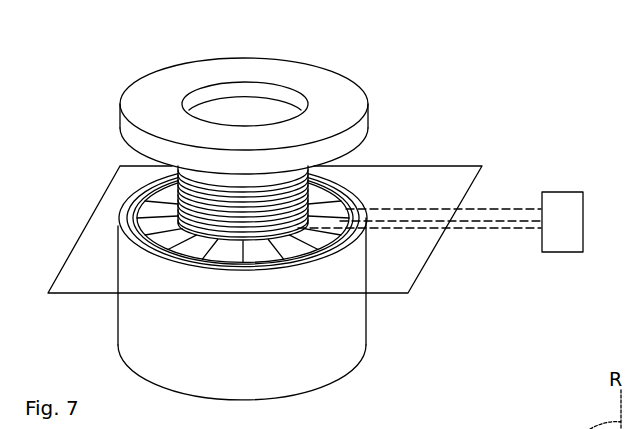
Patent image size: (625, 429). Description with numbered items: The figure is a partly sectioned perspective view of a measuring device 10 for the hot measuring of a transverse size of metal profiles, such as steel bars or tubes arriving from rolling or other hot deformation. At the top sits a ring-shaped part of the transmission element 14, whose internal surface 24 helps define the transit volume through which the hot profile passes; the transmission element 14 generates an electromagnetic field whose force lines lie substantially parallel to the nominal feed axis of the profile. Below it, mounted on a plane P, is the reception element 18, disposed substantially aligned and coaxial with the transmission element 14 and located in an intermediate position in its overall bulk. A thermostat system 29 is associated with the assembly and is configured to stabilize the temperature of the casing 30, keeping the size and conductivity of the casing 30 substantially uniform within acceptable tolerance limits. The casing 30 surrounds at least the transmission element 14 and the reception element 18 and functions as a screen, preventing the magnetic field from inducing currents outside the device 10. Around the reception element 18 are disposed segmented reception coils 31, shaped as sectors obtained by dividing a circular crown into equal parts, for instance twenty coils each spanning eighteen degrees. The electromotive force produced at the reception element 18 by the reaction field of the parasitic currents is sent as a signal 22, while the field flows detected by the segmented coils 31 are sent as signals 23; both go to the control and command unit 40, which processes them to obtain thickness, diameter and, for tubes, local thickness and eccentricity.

The measuring device 10 is at (414, 127).
The transmission element 14 is at (347, 178).
The reception element 18 is at (296, 232).
The signal 22 is at (518, 232).
The signals 23 is at (518, 208).
The internal surface 24 is at (244, 105).
The thermostat system 29 is at (137, 214).
The casing 30 is at (351, 324).
The reception coils 31 is at (232, 263).
The control and command unit 40 is at (567, 186).
The mounting plane P is at (421, 243).